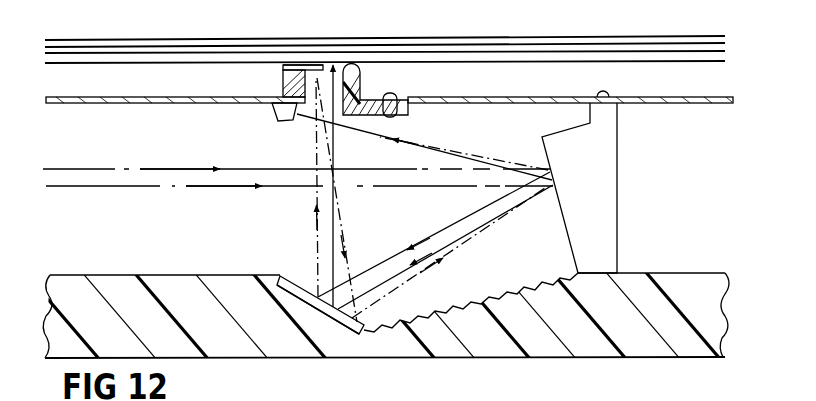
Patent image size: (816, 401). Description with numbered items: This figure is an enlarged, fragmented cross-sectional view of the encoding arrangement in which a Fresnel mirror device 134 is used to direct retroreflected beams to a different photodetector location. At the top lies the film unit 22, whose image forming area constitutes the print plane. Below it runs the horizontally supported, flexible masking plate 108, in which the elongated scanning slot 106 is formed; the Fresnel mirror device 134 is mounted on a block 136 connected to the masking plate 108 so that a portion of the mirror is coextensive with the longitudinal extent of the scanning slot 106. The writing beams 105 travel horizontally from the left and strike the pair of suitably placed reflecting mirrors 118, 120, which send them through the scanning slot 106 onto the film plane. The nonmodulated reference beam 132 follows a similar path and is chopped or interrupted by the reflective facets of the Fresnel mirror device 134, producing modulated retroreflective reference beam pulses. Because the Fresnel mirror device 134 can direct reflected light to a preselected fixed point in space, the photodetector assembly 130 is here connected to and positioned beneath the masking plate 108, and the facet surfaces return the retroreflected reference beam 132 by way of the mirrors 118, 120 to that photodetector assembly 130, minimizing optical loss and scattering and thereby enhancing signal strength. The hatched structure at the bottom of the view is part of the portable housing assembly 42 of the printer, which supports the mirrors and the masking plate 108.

The film unit 22 is at (466, 50).
The portable housing assembly 42 is at (593, 348).
The writing beams 105 is at (129, 187).
The scanning slot 106 is at (327, 97).
The masking plate 108 is at (151, 111).
The reflecting mirror 118 is at (575, 252).
The reflecting mirror 120 is at (297, 278).
The photodetector assembly 130 is at (283, 121).
The reference beam 132 is at (98, 169).
The Fresnel mirror device 134 is at (305, 65).
The block 136 is at (283, 78).